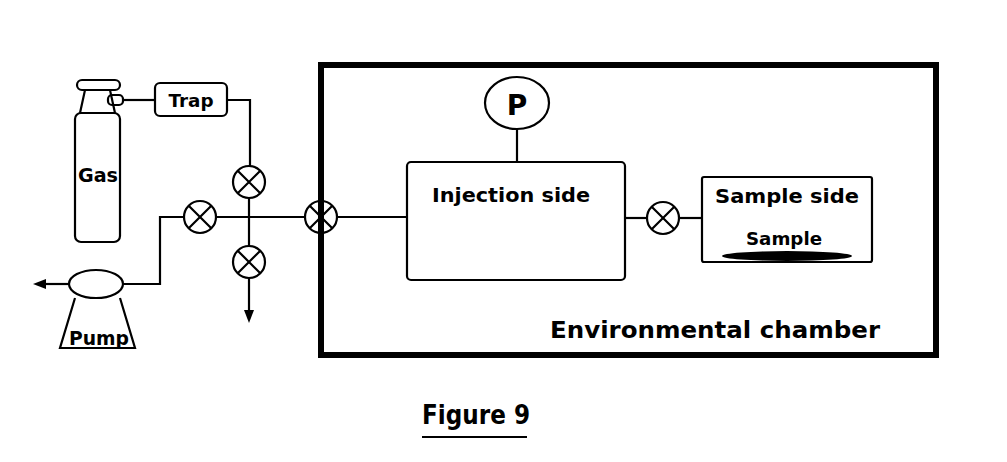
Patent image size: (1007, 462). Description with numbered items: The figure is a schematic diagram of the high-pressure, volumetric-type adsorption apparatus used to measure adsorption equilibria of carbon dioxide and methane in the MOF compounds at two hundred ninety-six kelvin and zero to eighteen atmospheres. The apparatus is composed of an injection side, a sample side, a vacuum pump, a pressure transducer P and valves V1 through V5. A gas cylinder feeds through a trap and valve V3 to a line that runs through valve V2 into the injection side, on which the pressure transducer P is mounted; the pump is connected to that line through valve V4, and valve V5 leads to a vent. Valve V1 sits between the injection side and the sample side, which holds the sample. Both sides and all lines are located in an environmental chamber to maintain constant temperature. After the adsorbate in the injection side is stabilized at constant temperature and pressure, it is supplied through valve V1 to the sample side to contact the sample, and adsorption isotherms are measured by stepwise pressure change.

The valve V1 is at (663, 207).
The valve V2 is at (330, 227).
The valve V3 is at (256, 173).
The valve V4 is at (188, 213).
The valve V5 is at (256, 274).